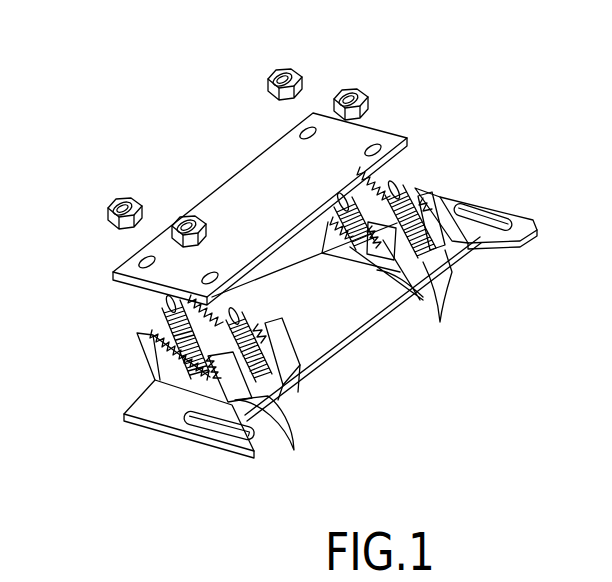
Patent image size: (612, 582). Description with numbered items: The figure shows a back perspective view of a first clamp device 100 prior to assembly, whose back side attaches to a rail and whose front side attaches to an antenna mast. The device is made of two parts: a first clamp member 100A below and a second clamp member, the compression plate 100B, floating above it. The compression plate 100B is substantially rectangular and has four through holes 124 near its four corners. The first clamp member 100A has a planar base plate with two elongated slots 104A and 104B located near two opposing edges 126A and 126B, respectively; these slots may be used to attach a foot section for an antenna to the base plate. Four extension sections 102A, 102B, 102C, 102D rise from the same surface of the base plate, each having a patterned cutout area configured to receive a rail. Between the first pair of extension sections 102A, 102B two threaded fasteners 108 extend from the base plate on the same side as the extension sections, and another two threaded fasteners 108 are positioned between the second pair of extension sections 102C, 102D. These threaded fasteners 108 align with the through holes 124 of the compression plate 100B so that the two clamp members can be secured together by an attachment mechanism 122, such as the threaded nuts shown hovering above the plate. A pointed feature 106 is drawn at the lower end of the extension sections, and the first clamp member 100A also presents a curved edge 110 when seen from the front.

The first clamp device 100 is at (513, 94).
The first clamp member 100A is at (175, 448).
The compression plate 100B is at (226, 200).
The extension section 102A is at (153, 353).
The extension section 102B is at (298, 352).
The extension section 102C is at (340, 256).
The extension section 102D is at (478, 240).
The elongated slot 104A is at (230, 432).
The elongated slot 104B is at (490, 222).
The prong 106 is at (356, 364).
The threaded fastener 108 is at (410, 197).
The curved edge 110 is at (368, 331).
The attachment mechanism 122 is at (107, 212).
The through hole 124 is at (120, 268).
The edge 126A is at (124, 421).
The edge 126B is at (418, 185).